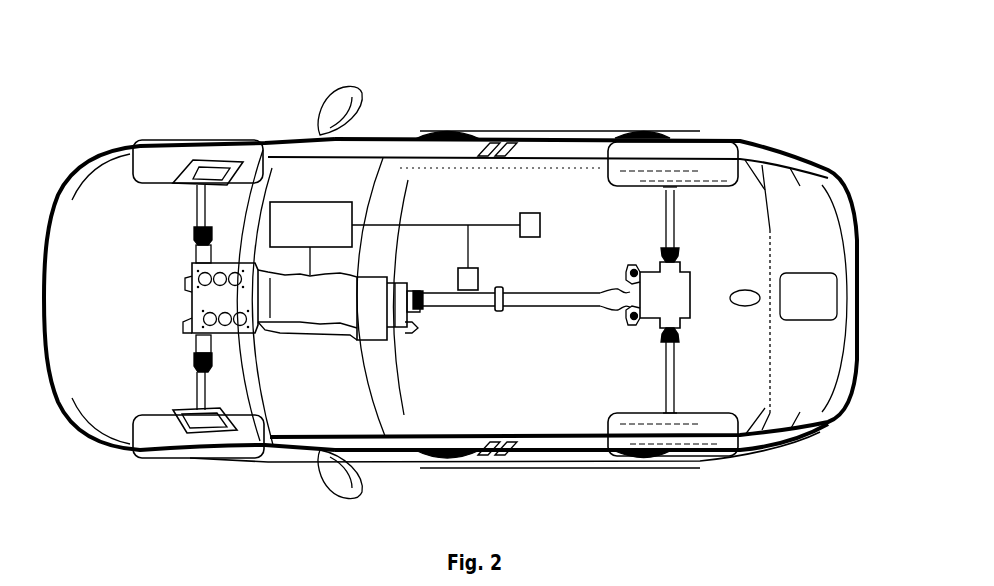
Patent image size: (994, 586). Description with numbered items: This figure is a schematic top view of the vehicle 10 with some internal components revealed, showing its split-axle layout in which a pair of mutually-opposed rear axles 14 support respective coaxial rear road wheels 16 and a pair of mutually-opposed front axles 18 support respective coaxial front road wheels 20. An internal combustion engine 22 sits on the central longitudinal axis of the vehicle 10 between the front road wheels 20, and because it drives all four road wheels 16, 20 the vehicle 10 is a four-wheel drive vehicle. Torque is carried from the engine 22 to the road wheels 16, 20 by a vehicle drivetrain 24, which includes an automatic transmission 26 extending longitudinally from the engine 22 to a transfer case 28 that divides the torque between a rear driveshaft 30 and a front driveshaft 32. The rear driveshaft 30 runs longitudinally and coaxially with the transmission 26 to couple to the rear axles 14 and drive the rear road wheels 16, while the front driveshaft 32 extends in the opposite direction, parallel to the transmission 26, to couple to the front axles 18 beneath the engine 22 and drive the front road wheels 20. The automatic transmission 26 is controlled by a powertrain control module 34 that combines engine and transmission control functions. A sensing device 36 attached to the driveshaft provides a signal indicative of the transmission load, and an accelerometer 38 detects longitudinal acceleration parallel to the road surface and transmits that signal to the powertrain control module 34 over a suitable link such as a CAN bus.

The vehicle 10 is at (145, 86).
The rear axles 14 is at (668, 367).
The rear road wheels 16 is at (715, 165).
The front axles 18 is at (200, 407).
The front road wheels 20 is at (230, 148).
The internal combustion engine 22 is at (253, 308).
The vehicle drivetrain 24 is at (482, 366).
The automatic transmission 26 is at (327, 308).
The transfer case 28 is at (402, 318).
The rear driveshaft 30 is at (523, 303).
The front driveshaft 32 is at (303, 330).
The powertrain control module 34 is at (345, 212).
The sensing device 36 is at (478, 280).
The accelerometer 38 is at (541, 230).